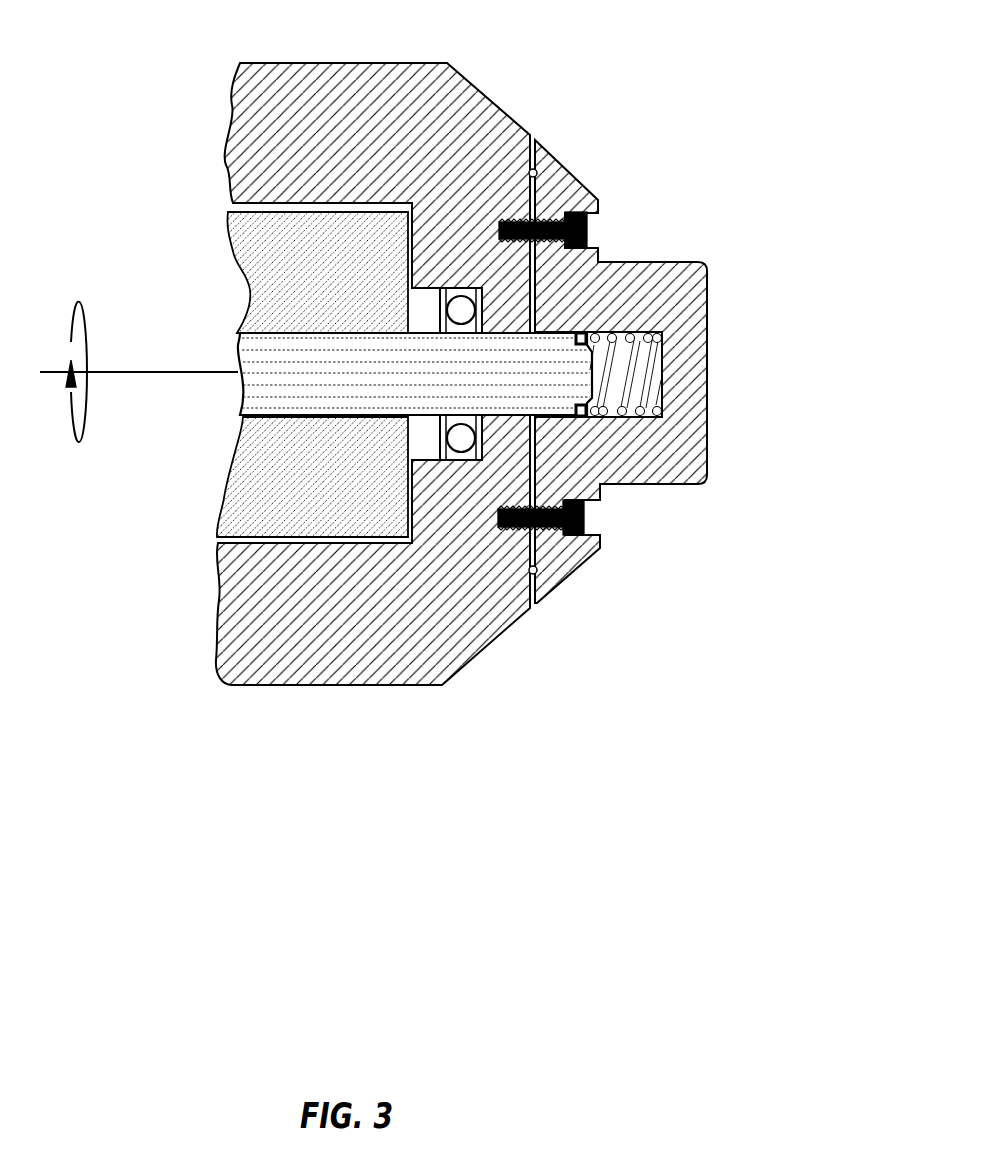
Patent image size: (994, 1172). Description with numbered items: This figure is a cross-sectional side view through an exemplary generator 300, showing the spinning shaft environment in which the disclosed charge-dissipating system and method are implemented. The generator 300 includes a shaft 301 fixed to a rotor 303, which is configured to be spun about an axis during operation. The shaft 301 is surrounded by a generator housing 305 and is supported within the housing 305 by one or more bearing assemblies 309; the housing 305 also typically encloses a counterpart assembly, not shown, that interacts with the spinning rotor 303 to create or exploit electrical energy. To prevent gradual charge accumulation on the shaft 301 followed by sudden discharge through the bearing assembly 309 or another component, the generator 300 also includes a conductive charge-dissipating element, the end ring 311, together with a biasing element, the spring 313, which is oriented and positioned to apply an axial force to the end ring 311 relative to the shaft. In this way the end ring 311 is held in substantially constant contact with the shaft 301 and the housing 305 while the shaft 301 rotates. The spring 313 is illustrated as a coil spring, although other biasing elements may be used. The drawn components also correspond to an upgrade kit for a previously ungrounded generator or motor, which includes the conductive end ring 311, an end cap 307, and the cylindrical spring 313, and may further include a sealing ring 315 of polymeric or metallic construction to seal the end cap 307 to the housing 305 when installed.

The generator 300 is at (430, 430).
The shaft 301 is at (240, 405).
The rotor 303 is at (225, 505).
The generator housing 305 is at (242, 667).
The end cap 307 is at (690, 382).
The bearing assembly 309 is at (458, 437).
The end ring 311 is at (588, 335).
The spring 313 is at (643, 335).
The sealing ring 315 is at (538, 163).